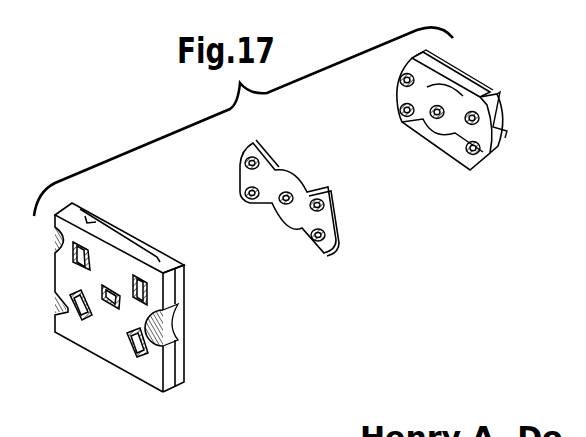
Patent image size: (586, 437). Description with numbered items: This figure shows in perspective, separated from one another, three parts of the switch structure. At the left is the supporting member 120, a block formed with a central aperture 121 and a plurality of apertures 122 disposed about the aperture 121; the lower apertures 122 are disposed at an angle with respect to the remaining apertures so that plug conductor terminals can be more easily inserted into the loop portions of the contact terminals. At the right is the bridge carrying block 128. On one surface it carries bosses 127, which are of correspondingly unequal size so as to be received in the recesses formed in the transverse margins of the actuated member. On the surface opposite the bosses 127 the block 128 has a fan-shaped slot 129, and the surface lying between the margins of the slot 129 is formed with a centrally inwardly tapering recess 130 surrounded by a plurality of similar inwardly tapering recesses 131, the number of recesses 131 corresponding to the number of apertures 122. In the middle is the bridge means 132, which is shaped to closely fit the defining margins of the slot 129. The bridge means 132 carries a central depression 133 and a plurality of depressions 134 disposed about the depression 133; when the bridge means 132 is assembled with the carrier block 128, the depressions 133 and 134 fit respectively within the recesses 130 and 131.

The supporting member 120 is at (187, 273).
The central aperture 121 is at (112, 312).
The apertures 122 is at (93, 255).
The bosses 127 is at (424, 52).
The bridge carrying block 128 is at (505, 99).
The fan-shaped slot 129 is at (472, 164).
The centrally inwardly tapering recess 130 is at (436, 118).
The inwardly tapering recesses 131 is at (402, 80).
The bridge means 132 is at (341, 233).
The central depression 133 is at (289, 195).
The depressions 134 is at (262, 158).